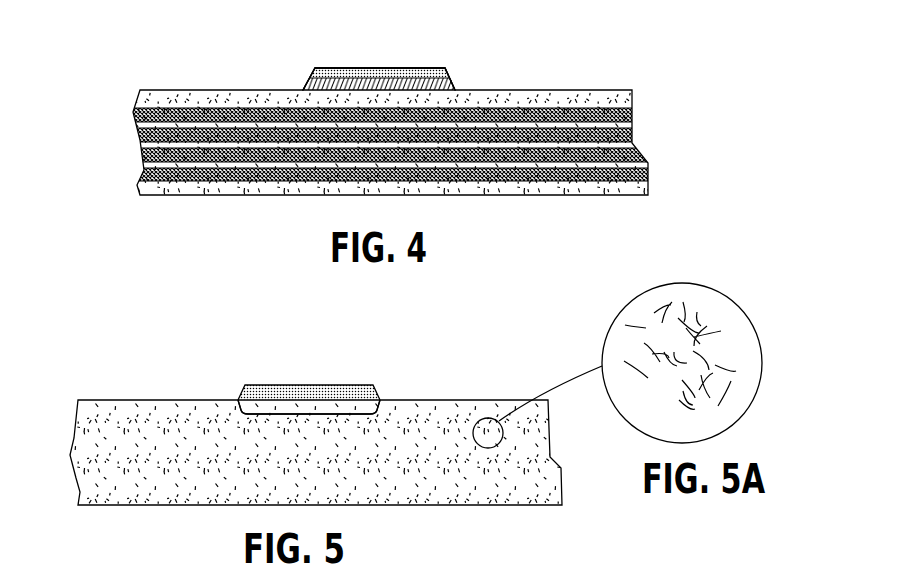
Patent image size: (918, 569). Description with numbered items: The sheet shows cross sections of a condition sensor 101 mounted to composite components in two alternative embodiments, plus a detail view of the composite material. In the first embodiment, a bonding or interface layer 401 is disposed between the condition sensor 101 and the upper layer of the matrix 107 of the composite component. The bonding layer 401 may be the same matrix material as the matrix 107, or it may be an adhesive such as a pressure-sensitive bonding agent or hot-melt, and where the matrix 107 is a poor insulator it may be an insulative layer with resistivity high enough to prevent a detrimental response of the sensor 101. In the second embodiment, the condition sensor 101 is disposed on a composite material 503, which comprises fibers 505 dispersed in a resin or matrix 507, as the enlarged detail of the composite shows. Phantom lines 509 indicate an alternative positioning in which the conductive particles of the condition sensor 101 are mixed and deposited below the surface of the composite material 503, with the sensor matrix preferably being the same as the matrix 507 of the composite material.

In FIG. 4, the condition sensor 101 is at (326, 58).
In FIG. 5, the condition sensor 101 is at (295, 363).
In FIG. 4, the matrix 107 is at (138, 93).
In FIG. 4, the bonding or interface layer 401 is at (455, 88).
In FIG. 5, the composite material 503 is at (112, 373).
In FIG. 5A, the fibers 505 is at (742, 378).
In FIG. 5A, the matrix 507 is at (637, 307).
In FIG. 5, the phantom lines 509 is at (388, 412).